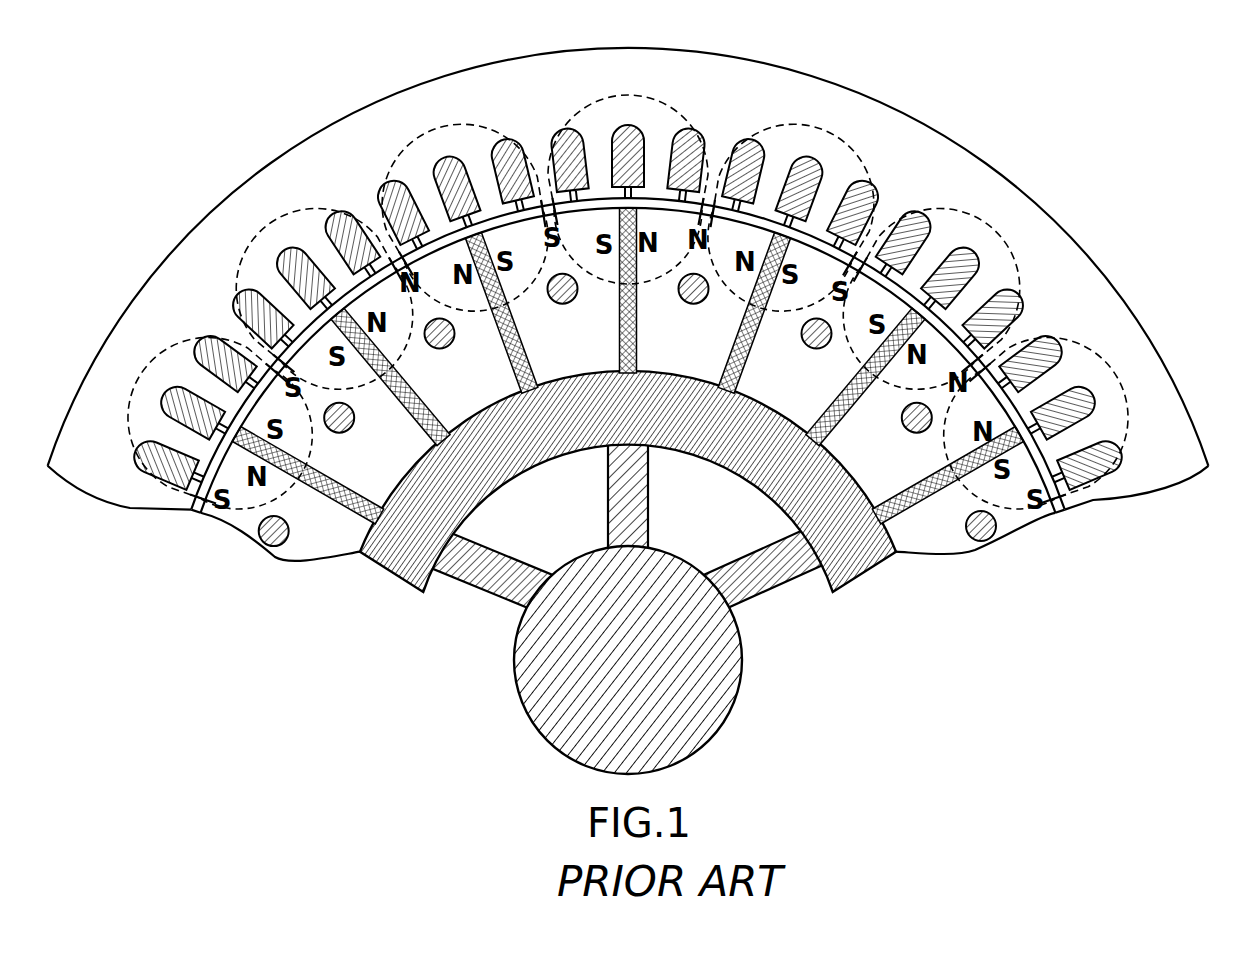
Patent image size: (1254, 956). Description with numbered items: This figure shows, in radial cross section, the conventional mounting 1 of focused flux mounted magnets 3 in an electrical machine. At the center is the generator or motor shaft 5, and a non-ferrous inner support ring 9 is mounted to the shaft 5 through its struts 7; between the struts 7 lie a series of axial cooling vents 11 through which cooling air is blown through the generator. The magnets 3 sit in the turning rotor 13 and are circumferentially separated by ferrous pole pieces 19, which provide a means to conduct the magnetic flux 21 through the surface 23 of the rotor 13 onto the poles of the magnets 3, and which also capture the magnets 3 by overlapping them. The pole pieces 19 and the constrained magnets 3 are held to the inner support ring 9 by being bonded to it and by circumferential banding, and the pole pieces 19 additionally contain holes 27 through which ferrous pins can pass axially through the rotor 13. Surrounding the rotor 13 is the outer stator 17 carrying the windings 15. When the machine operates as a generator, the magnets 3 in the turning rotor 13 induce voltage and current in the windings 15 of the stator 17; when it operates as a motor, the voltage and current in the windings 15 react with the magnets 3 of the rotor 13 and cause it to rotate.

The conventional mounting 1 is at (1030, 111).
The focused flux mounted magnets 3 is at (636, 322).
The generator or motor shaft 5 is at (698, 692).
The struts 7 is at (765, 588).
The non-ferrous inner support ring 9 is at (866, 577).
The axial cooling vents 11 is at (508, 540).
The rotor 13 is at (210, 568).
The windings 15 is at (1018, 292).
The outer stator 17 is at (1137, 290).
The ferrous pole pieces 19 is at (333, 545).
The magnetic flux 21 is at (1007, 230).
The surface of the rotor 23 is at (1065, 507).
The holes 27 is at (982, 541).